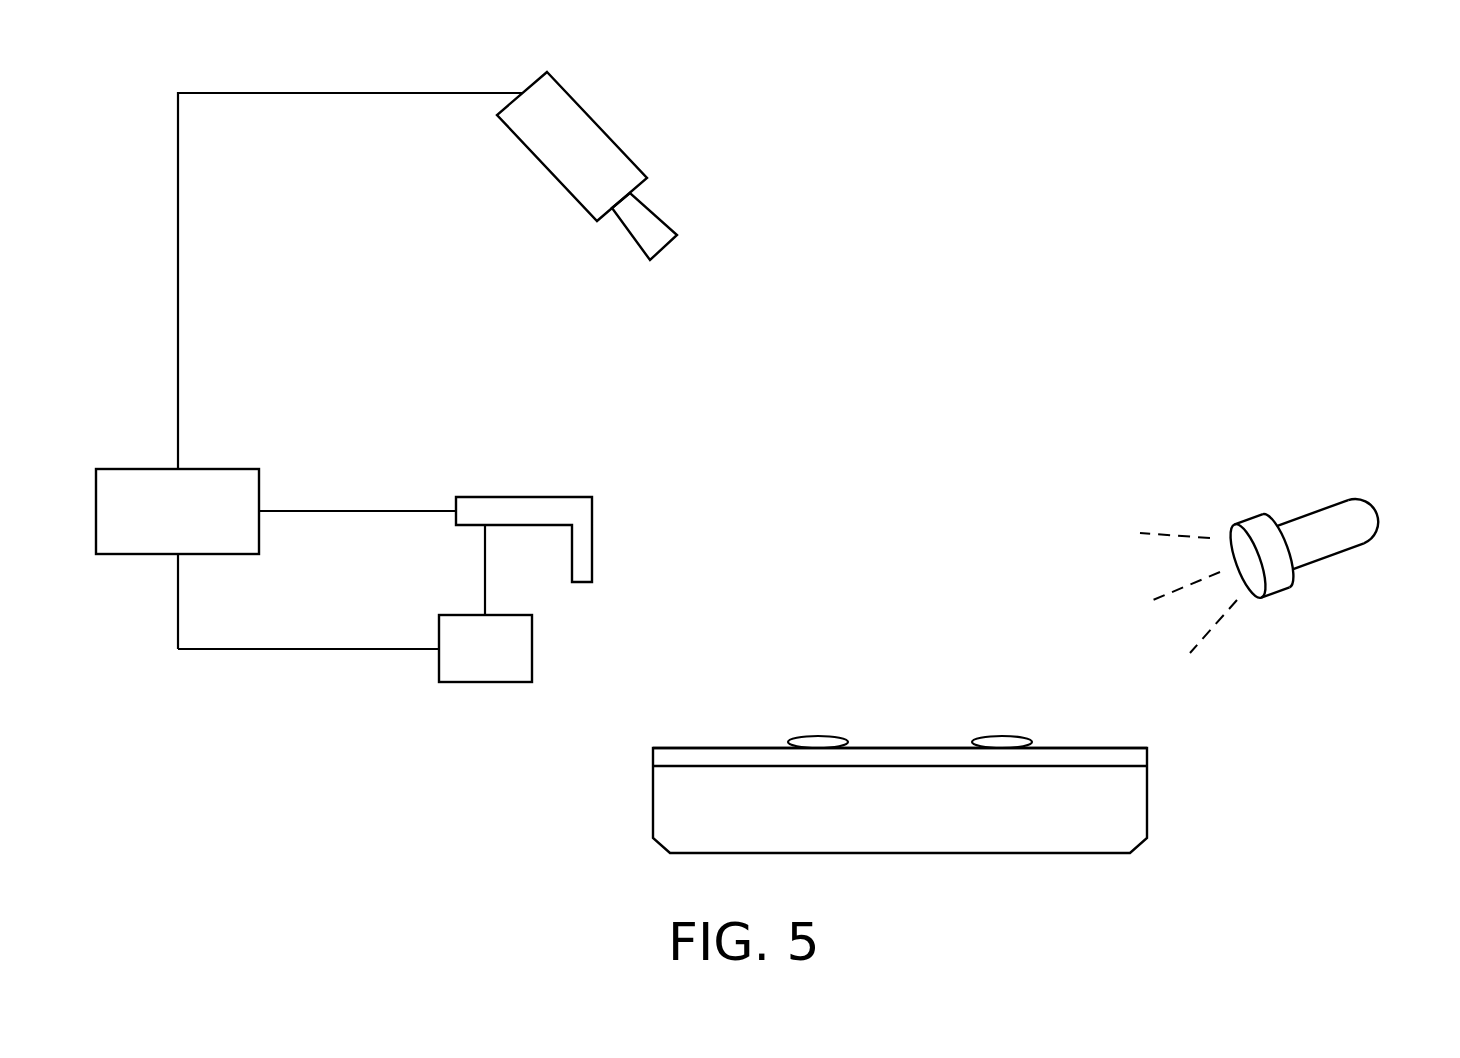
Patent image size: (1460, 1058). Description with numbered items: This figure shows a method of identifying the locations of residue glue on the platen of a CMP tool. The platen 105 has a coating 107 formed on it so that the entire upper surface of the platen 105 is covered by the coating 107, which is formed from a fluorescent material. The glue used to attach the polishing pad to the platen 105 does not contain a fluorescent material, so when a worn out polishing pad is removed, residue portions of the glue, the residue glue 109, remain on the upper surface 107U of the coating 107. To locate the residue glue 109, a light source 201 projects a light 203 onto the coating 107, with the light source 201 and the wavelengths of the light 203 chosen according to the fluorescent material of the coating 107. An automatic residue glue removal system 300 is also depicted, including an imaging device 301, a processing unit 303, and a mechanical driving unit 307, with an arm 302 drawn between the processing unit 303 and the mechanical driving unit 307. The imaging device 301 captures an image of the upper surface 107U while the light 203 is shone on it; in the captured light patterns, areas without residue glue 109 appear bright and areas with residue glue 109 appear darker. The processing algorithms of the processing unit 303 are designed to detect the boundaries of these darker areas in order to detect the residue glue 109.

The automatic residue glue removal system 300 is at (308, 84).
The imaging device 301 is at (598, 125).
The robotic arm 302 is at (525, 497).
The processing unit 303 is at (200, 530).
The mechanical driving unit 307 is at (485, 683).
The light source 201 is at (1347, 497).
The light 203 is at (1170, 532).
The platen 105 is at (1147, 805).
The coating 107 is at (1147, 757).
The upper surface of the coating 107U is at (695, 748).
The residue glue 109 is at (818, 735).